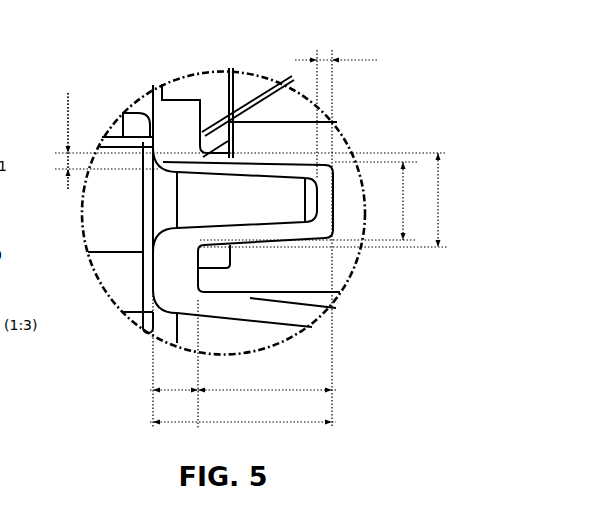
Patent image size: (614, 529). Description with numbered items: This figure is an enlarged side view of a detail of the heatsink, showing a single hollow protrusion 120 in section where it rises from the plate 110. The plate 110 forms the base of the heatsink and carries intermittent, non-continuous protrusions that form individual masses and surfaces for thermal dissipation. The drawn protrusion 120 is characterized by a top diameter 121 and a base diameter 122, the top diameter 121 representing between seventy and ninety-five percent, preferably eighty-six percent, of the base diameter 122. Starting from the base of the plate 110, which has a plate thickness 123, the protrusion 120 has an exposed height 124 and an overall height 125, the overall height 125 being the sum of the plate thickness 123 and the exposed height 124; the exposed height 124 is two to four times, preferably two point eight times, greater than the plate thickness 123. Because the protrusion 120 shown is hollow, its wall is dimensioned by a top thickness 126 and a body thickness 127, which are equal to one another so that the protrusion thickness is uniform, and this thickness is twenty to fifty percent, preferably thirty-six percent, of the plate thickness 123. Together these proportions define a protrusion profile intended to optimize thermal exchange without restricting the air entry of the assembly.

The plate 110 is at (177, 137).
The protrusion 120 is at (280, 157).
The top diameter 121 is at (403, 183).
The base diameter 122 is at (438, 200).
The plate thickness 123 is at (174, 382).
The exposed height 124 is at (267, 382).
The overall height 125 is at (243, 414).
The top thickness 126 is at (336, 53).
The body thickness 127 is at (68, 118).